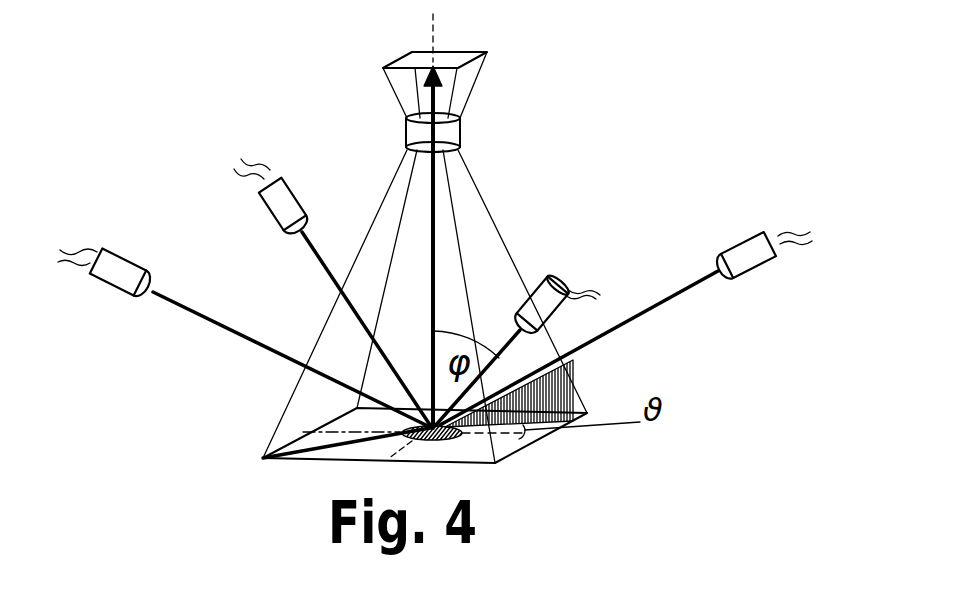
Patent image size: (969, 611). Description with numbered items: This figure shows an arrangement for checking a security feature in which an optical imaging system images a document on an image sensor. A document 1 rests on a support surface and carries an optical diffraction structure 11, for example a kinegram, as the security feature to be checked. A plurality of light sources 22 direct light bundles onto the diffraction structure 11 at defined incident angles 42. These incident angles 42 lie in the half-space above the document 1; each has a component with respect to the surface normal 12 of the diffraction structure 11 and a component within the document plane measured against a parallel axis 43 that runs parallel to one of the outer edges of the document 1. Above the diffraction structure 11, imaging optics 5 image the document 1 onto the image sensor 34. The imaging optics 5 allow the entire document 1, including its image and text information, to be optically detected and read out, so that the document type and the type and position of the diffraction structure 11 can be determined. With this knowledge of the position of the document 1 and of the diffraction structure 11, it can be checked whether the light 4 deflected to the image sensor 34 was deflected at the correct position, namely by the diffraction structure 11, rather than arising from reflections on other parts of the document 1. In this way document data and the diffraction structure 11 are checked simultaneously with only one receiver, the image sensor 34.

The document 1 is at (357, 420).
The light deflected to the image sensor 4 is at (434, 176).
The imaging optics 5 is at (458, 133).
The optical diffraction structure 11 is at (368, 440).
The surface normal 12 is at (430, 37).
The light sources 22 is at (150, 282).
The image sensor 34 is at (383, 67).
The incident angles 42 is at (497, 367).
The parallel axis 43 is at (497, 428).